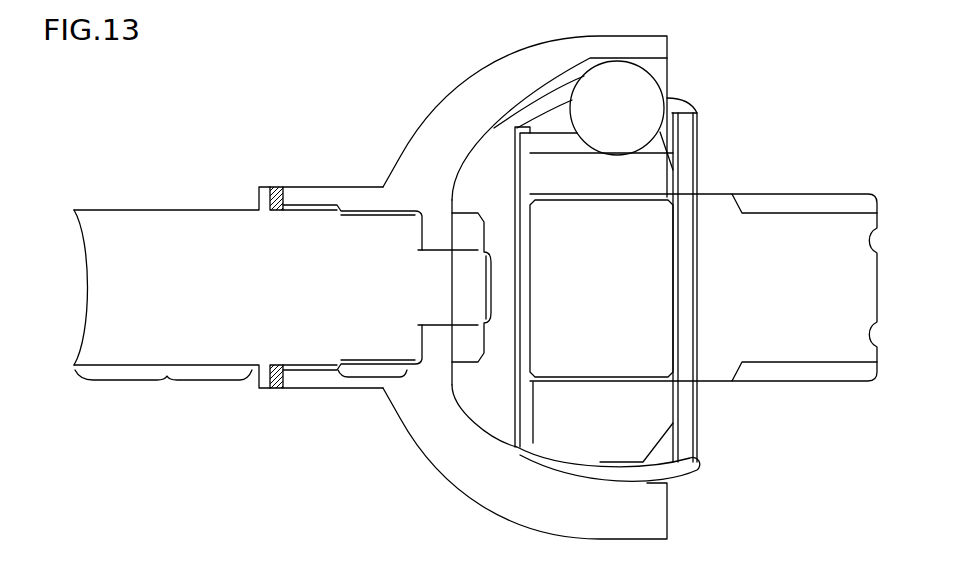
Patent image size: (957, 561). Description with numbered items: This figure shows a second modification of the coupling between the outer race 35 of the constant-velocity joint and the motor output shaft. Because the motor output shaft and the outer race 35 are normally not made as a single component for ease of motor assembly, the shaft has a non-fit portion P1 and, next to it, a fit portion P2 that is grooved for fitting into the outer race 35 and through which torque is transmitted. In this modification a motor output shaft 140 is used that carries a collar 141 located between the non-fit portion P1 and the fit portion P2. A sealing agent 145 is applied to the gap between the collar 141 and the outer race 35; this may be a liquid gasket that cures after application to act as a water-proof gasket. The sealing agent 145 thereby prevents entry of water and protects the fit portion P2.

The outer race 35 is at (417, 430).
The motor output shaft 140 is at (182, 218).
The sealing agent 145 is at (278, 188).
The collar 141 is at (260, 388).
The non-fit portion P1 is at (167, 382).
The fit portion P2 is at (375, 380).